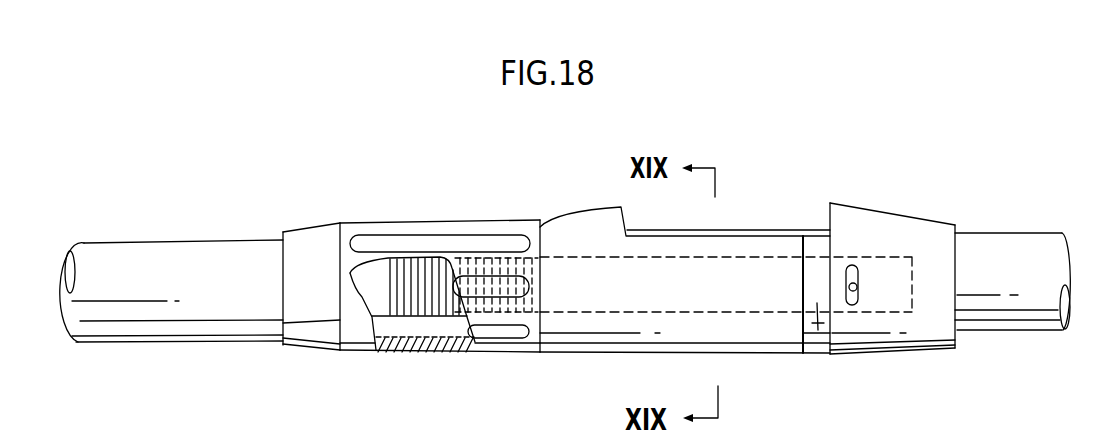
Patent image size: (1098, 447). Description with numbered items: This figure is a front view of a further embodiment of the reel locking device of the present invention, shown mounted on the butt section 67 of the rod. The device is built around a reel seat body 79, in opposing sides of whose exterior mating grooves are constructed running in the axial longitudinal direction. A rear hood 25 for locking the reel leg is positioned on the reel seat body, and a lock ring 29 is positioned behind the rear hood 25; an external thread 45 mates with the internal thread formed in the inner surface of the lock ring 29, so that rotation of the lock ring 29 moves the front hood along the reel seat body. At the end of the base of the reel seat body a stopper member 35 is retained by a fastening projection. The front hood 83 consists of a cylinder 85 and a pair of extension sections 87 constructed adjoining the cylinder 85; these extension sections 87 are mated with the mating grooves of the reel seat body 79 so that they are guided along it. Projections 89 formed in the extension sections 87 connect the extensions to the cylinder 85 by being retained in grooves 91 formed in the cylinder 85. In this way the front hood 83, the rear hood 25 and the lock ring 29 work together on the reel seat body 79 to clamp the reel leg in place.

The rear hood 25 is at (577, 204).
The lock ring 29 is at (399, 232).
The stopper member 35 is at (310, 330).
The external thread 45 is at (418, 295).
The butt section of the rod 67 is at (181, 250).
The reel seat body 79 is at (813, 243).
The front hood 83 is at (913, 211).
The cylinder 85 is at (877, 340).
The extension sections 87 is at (813, 352).
The projections 89 is at (852, 263).
The grooves 91 is at (862, 290).